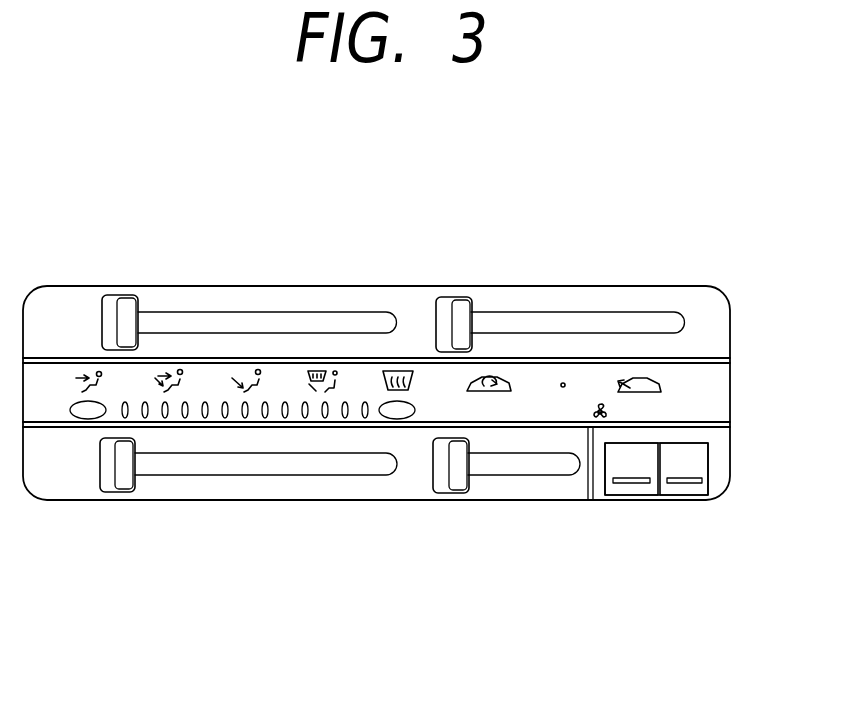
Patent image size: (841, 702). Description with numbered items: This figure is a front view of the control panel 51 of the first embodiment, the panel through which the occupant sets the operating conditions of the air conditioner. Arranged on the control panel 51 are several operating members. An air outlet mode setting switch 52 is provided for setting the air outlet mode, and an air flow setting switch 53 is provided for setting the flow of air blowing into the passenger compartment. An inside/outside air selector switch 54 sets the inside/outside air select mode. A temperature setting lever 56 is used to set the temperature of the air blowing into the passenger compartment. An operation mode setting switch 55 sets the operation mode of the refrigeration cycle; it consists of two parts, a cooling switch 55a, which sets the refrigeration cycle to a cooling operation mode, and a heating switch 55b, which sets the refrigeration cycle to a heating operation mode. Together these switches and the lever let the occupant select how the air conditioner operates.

The control panel 51 is at (334, 245).
The air outlet mode setting switch 52 is at (128, 296).
The air flow setting switch 53 is at (438, 494).
The inside/outside air selector switch 54 is at (468, 297).
The operation mode setting switch 55 is at (667, 538).
The cooling switch 55a is at (625, 495).
The heating switch 55b is at (697, 510).
The temperature setting lever 56 is at (127, 493).